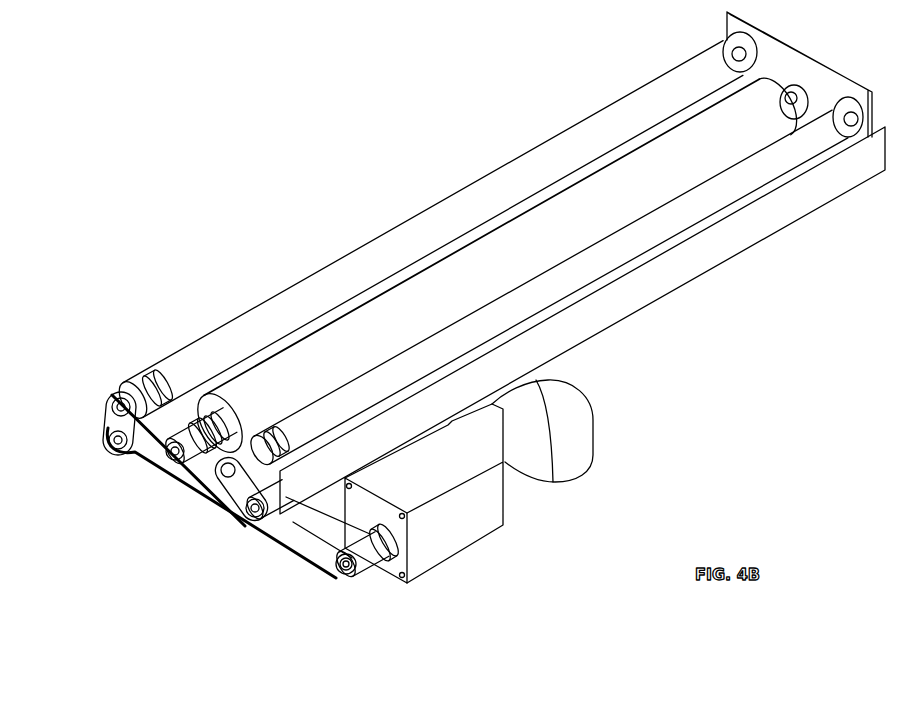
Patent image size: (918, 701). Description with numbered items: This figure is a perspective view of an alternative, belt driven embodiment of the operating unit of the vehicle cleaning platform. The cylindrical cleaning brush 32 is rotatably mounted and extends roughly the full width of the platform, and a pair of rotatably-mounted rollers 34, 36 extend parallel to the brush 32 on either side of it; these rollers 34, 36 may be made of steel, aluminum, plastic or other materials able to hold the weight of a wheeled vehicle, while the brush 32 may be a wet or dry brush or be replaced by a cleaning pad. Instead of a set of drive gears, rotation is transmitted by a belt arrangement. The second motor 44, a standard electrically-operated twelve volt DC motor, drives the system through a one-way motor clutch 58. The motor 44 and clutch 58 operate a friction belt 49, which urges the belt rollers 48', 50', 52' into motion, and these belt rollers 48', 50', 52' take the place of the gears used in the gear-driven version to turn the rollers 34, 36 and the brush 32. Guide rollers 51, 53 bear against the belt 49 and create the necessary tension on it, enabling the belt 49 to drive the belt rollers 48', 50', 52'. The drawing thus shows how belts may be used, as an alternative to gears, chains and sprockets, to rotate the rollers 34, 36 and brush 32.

The roller 36 is at (207, 352).
The cylindrical cleaning brush 32 is at (300, 356).
The roller 34 is at (402, 378).
The second motor 44 is at (467, 507).
The belt roller 52' is at (142, 408).
The guide roller 53 is at (110, 435).
The belt roller 50' is at (149, 462).
The belt roller 48' is at (183, 507).
The guide roller 51 is at (247, 510).
The friction belt 49 is at (297, 525).
The one-way motor clutch 58 is at (335, 572).